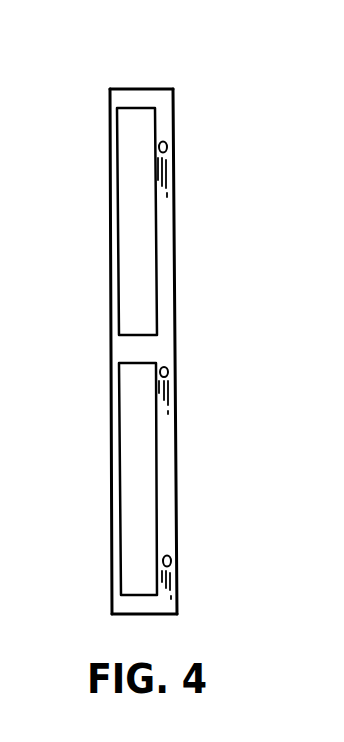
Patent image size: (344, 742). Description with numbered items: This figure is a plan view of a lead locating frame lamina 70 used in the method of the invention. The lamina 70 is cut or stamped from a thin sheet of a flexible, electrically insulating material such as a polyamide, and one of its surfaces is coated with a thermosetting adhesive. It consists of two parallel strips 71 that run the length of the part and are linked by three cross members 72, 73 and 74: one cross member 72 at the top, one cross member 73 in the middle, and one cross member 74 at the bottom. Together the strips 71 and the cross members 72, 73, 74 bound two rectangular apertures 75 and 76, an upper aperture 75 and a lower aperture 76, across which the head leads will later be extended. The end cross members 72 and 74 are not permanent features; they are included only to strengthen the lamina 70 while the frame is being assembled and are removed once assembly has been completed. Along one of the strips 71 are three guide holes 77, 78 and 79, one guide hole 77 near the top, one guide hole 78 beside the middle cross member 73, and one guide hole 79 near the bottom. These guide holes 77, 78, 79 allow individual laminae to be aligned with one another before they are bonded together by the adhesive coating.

The locating frame lamina 70 is at (187, 87).
The parallel strips 71 is at (118, 218).
The cross member 72 is at (128, 101).
The cross member 73 is at (130, 350).
The cross member 74 is at (122, 603).
The rectangular aperture 75 is at (131, 255).
The rectangular aperture 76 is at (143, 477).
The guide hole 77 is at (167, 144).
The guide hole 78 is at (169, 372).
The guide hole 79 is at (172, 560).